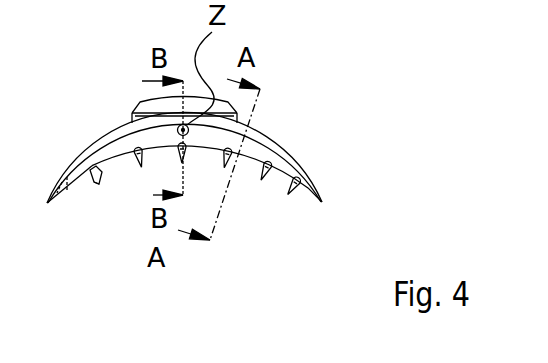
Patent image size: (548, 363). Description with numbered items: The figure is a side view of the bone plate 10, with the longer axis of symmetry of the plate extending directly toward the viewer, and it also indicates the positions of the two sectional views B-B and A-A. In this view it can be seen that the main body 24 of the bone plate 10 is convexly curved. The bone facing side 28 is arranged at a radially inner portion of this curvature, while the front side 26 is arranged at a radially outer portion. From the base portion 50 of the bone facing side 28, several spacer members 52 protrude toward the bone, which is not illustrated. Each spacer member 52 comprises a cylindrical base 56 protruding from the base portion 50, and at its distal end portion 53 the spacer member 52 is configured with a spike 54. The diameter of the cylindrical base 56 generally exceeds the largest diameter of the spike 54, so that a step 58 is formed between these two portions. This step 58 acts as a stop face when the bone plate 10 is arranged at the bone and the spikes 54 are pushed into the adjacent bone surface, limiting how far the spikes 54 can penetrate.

The bone plate 10 is at (311, 109).
The main body 24 is at (291, 159).
The front side 26 is at (99, 111).
The bone facing side 28 is at (299, 212).
The base portion 50 is at (240, 160).
The spacer member 52 is at (75, 197).
The distal end portion 53 is at (112, 216).
The spike 54 is at (97, 184).
The cylindrical base 56 is at (89, 172).
The step 58 is at (79, 195).